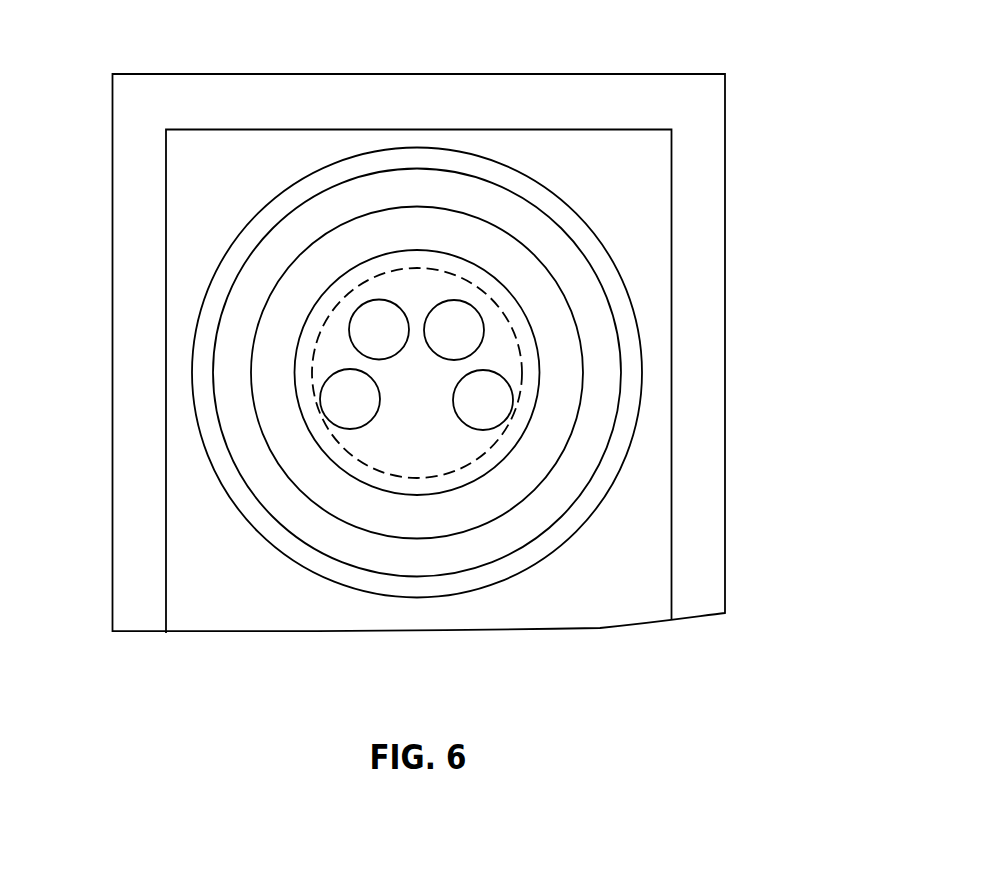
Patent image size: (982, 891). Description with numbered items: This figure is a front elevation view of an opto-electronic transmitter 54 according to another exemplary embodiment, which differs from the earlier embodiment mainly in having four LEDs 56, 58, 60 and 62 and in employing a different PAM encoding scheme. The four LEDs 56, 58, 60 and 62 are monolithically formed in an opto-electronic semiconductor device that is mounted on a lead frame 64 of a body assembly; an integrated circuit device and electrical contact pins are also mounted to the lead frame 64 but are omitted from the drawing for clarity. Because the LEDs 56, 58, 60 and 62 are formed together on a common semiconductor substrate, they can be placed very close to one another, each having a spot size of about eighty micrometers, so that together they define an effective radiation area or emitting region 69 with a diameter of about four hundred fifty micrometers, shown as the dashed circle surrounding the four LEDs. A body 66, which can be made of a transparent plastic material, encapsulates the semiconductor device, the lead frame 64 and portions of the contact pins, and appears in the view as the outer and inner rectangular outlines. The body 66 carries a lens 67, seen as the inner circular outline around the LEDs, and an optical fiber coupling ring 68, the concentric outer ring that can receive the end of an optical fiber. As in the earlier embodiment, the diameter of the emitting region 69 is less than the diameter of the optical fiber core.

The opto-electronic transmitter 54 is at (803, 52).
The LED 56 is at (328, 374).
The LED 58 is at (508, 385).
The LED 60 is at (350, 317).
The LED 62 is at (484, 330).
The lead frame 64 is at (166, 560).
The body 66 is at (725, 541).
The lens 67 is at (488, 473).
The optical fiber coupling ring 68 is at (542, 183).
The emitting region 69 is at (392, 477).